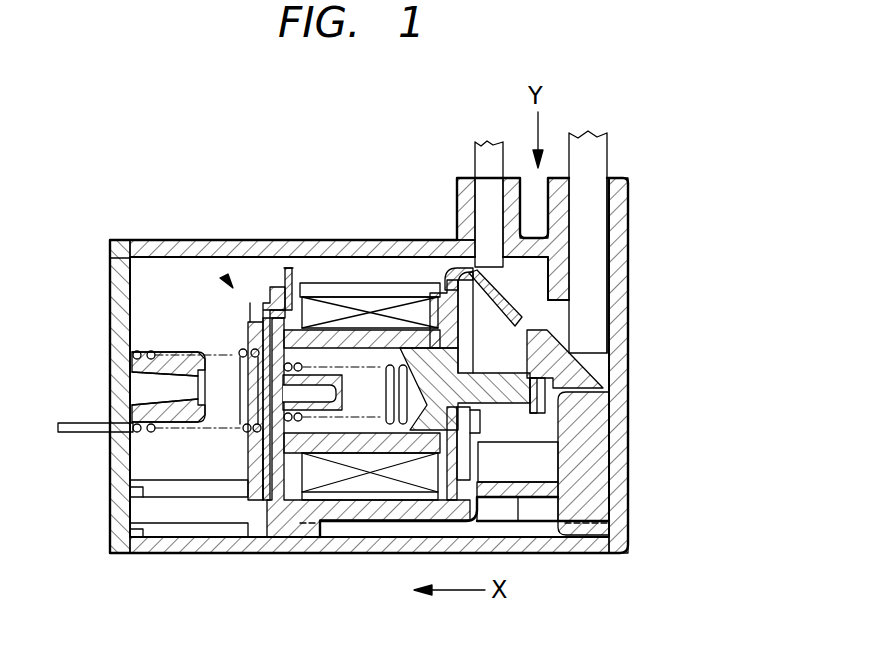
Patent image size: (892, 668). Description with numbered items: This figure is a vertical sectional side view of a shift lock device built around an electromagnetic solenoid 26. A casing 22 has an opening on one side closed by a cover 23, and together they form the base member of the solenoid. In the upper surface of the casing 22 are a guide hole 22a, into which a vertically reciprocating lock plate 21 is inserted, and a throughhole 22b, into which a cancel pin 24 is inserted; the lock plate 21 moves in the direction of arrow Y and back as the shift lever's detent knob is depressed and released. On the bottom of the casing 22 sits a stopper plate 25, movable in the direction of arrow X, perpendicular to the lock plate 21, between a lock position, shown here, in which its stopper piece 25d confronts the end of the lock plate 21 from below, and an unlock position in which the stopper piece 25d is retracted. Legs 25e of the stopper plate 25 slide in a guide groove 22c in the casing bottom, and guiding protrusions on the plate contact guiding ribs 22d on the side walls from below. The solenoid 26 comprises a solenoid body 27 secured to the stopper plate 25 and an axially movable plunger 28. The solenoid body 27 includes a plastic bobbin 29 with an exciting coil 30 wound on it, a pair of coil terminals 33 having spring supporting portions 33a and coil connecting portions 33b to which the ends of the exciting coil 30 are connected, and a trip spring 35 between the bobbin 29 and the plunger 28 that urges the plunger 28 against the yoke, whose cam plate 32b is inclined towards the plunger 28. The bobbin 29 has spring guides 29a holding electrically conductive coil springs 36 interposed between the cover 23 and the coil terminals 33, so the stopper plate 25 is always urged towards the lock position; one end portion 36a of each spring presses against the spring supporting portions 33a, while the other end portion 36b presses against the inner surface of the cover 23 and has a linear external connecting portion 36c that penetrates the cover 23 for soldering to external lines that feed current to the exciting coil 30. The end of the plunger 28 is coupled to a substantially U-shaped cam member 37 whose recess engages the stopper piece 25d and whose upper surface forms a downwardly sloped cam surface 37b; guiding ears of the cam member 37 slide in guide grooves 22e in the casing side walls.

The lock plate 21 is at (608, 142).
The casing 22 is at (627, 224).
The guide hole 22a is at (614, 199).
The throughhole 22b is at (478, 218).
The guide groove 22c is at (157, 530).
The guiding ribs 22d is at (162, 490).
The guide grooves 22e is at (611, 462).
The cover 23 is at (133, 276).
The cancel pin 24 is at (478, 218).
The stopper plate 25 is at (540, 500).
The stopper piece 25d is at (580, 404).
The legs 25e is at (318, 528).
The electromagnetic solenoid 26 is at (226, 278).
The solenoid body 27 is at (236, 258).
The plunger 28 is at (371, 258).
The bobbin 29 is at (268, 258).
The spring guides 29a is at (207, 355).
The exciting coil 30 is at (312, 258).
The cam plate 32b is at (507, 294).
The coil terminals 33 is at (275, 485).
The spring supporting portions 33a is at (262, 450).
The coil connecting portions 33b is at (290, 258).
The trip spring 35 is at (401, 428).
The coil springs 36 is at (243, 400).
The one end portion 36a is at (252, 345).
The other end portion 36b is at (150, 412).
The external connecting portion 36c is at (63, 423).
The cam member 37 is at (548, 334).
The cam surface 37b is at (546, 387).